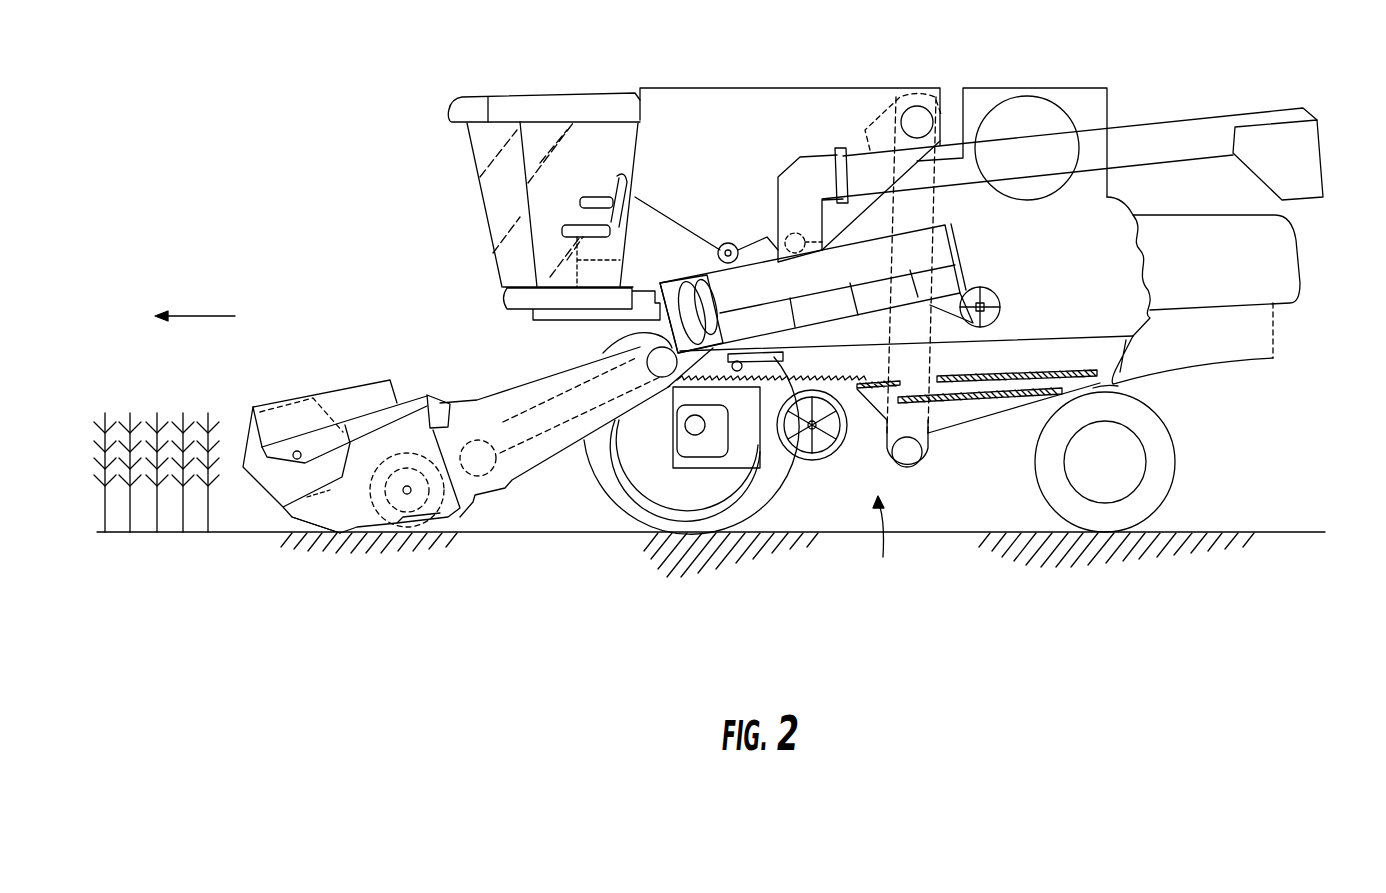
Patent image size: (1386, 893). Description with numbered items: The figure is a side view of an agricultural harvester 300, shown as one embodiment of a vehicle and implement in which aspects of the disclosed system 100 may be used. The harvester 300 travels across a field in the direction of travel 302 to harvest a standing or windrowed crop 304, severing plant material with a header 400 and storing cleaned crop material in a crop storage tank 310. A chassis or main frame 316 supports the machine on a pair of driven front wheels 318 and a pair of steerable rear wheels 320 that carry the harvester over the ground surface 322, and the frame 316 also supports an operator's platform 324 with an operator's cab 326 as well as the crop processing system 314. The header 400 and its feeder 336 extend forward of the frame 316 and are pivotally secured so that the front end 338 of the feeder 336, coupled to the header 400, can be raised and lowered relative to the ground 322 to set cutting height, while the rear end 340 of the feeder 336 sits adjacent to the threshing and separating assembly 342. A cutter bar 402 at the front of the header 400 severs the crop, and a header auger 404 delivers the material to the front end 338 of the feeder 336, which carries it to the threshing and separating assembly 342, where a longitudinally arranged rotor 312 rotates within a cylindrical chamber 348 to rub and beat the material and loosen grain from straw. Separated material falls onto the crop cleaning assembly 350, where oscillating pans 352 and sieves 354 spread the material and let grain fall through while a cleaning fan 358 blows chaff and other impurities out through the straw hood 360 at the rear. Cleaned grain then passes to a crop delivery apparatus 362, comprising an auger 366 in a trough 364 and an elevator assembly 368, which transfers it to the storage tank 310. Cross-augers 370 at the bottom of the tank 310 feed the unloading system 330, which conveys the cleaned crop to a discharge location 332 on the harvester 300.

The system 100 is at (266, 512).
The agricultural harvester 300 is at (338, 114).
The direction of travel 302 is at (205, 316).
The crop 304 is at (103, 440).
The crop storage tank 310 is at (795, 97).
The rotor 312 is at (690, 297).
The crop processing system 314 is at (1032, 349).
The chassis or main frame 316 is at (1113, 393).
The front wheels 318 is at (597, 463).
The rear wheels 320 is at (1160, 493).
The ground surface 322 is at (1275, 532).
The operator's platform 324 is at (512, 297).
The operator's cab 326 is at (492, 207).
The unloading system 330 is at (1185, 128).
The discharge location 332 is at (1335, 152).
The feeder 336 is at (475, 370).
The front end 338 is at (432, 442).
The rear end 340 is at (640, 328).
The threshing and separating assembly 342 is at (688, 274).
The cylindrical chamber 348 is at (825, 333).
The crop cleaning assembly 350 is at (896, 542).
The pans 352 is at (884, 410).
The sieves 354 is at (940, 378).
The cleaning fan 358 is at (828, 455).
The straw hood 360 is at (1297, 277).
The crop delivery apparatus 362 is at (958, 204).
The trough 364 is at (930, 455).
The auger 366 is at (908, 458).
The elevator assembly 368 is at (903, 208).
The cross-augers 370 is at (787, 240).
The header 400 is at (324, 340).
The cutter bar 402 is at (320, 513).
The header auger 404 is at (385, 543).